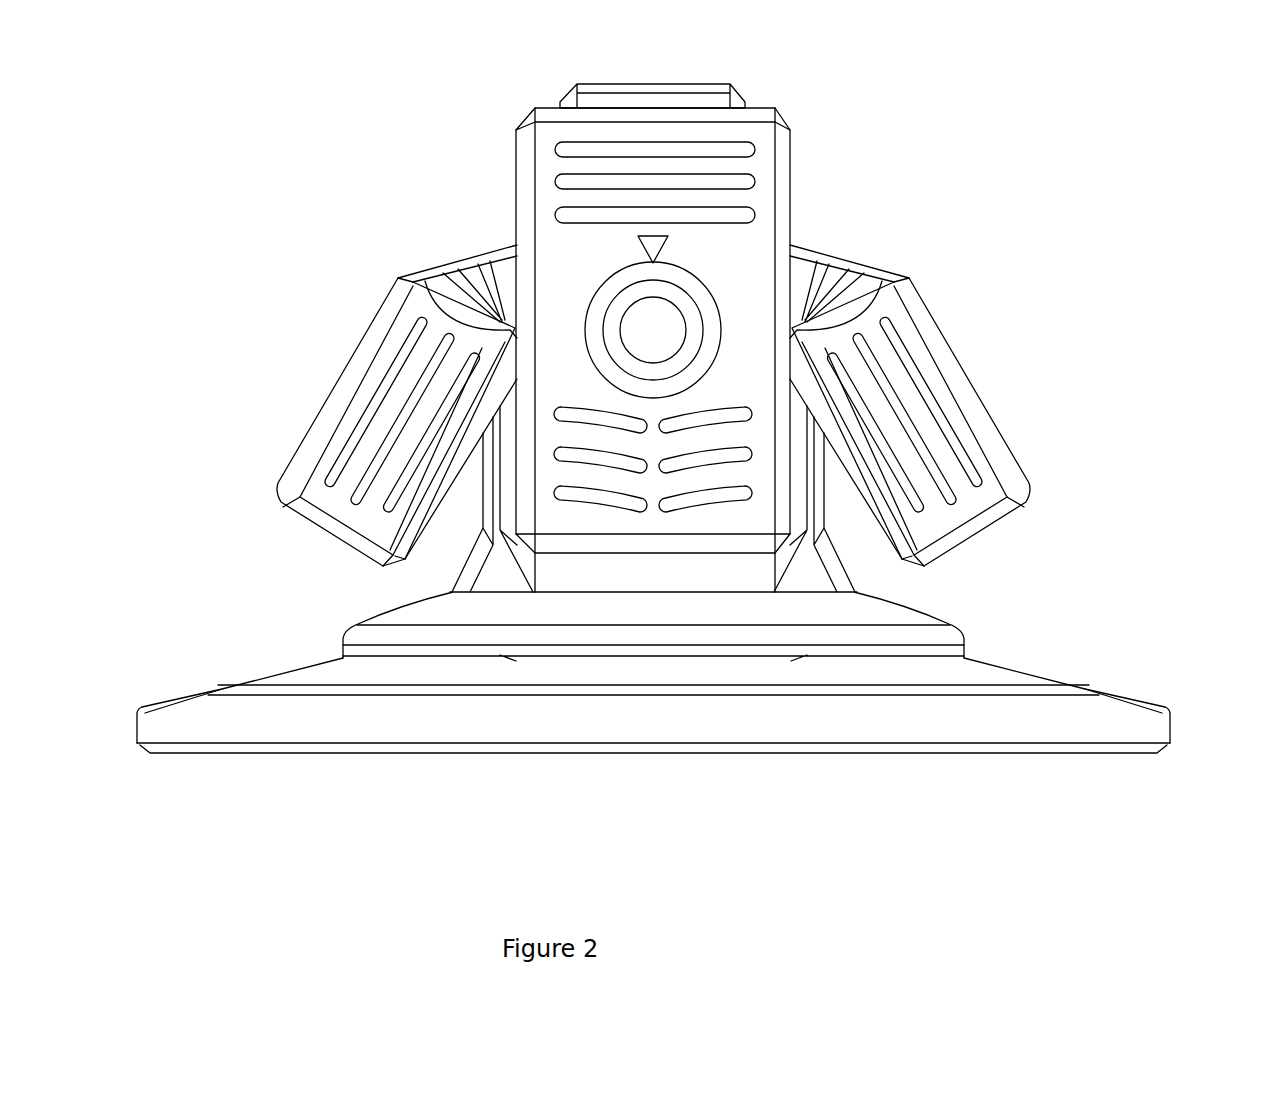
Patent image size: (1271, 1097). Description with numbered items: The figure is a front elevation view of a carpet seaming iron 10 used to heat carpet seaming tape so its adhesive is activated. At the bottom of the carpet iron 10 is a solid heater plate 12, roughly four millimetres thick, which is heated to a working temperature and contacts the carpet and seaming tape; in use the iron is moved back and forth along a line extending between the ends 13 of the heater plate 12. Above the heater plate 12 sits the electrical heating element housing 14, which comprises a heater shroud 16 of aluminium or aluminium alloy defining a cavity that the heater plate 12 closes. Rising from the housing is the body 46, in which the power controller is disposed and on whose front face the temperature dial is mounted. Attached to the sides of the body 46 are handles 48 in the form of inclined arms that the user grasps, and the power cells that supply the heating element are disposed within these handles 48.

The carpet seaming iron 10 is at (652, 455).
The heater plate 12 is at (652, 744).
The ends 13 is at (118, 729).
The electrical heating element housing 14 is at (153, 690).
The heater shroud 16 is at (205, 692).
The body 46 is at (751, 263).
The handles 48 is at (347, 373).